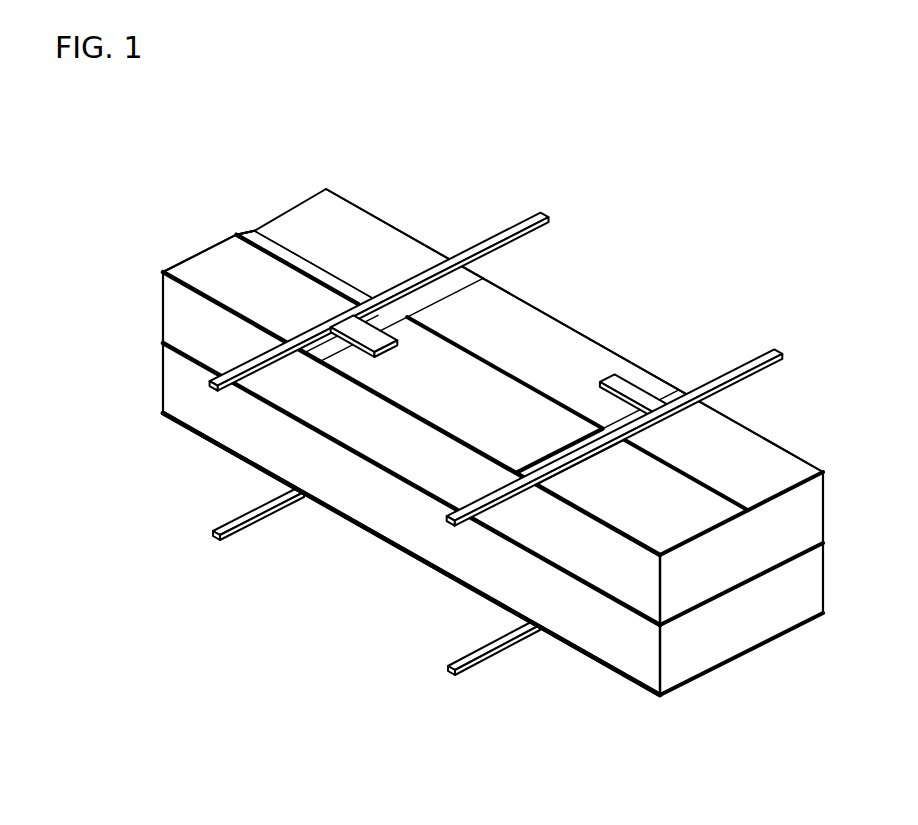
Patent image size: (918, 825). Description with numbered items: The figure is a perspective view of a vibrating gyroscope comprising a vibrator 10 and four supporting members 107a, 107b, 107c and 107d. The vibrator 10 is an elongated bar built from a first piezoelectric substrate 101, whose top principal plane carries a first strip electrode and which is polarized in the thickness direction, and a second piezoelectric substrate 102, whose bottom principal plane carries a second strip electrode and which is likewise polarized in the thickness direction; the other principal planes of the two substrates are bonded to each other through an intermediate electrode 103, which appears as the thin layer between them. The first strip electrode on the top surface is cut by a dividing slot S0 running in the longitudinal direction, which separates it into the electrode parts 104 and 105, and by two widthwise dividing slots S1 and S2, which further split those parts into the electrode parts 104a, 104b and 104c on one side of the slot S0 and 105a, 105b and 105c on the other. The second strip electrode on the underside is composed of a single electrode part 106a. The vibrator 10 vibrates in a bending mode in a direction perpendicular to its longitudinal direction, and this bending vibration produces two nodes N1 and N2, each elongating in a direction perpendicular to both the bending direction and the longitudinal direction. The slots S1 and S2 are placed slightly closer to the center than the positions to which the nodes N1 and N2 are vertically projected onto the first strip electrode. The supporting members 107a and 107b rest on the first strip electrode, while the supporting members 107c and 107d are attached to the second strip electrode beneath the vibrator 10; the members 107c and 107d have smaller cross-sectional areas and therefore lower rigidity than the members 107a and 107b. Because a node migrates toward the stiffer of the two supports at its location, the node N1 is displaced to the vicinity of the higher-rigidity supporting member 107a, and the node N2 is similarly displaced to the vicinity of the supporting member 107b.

The vibrator 10 is at (172, 190).
The first piezoelectric substrate 101 is at (170, 300).
The second piezoelectric substrate 102 is at (170, 394).
The intermediate electrode 103 is at (168, 347).
The electrode part 104 is at (307, 202).
The electrode part 104a is at (570, 357).
The electrode part 104b is at (388, 248).
The electrode part 104c is at (787, 462).
The electrode part 105 is at (183, 275).
The electrode part 105a is at (438, 383).
The electrode part 105b is at (258, 278).
The electrode part 105c is at (657, 490).
The electrode part 106a is at (417, 562).
The supporting member 107a is at (540, 213).
The supporting member 107b is at (765, 352).
The supporting member 107c is at (277, 520).
The supporting member 107d is at (505, 655).
The dividing slot S0 is at (248, 227).
The dividing slot S1 is at (470, 273).
The dividing slot S2 is at (673, 387).
The node N1 is at (297, 357).
The node N2 is at (530, 487).